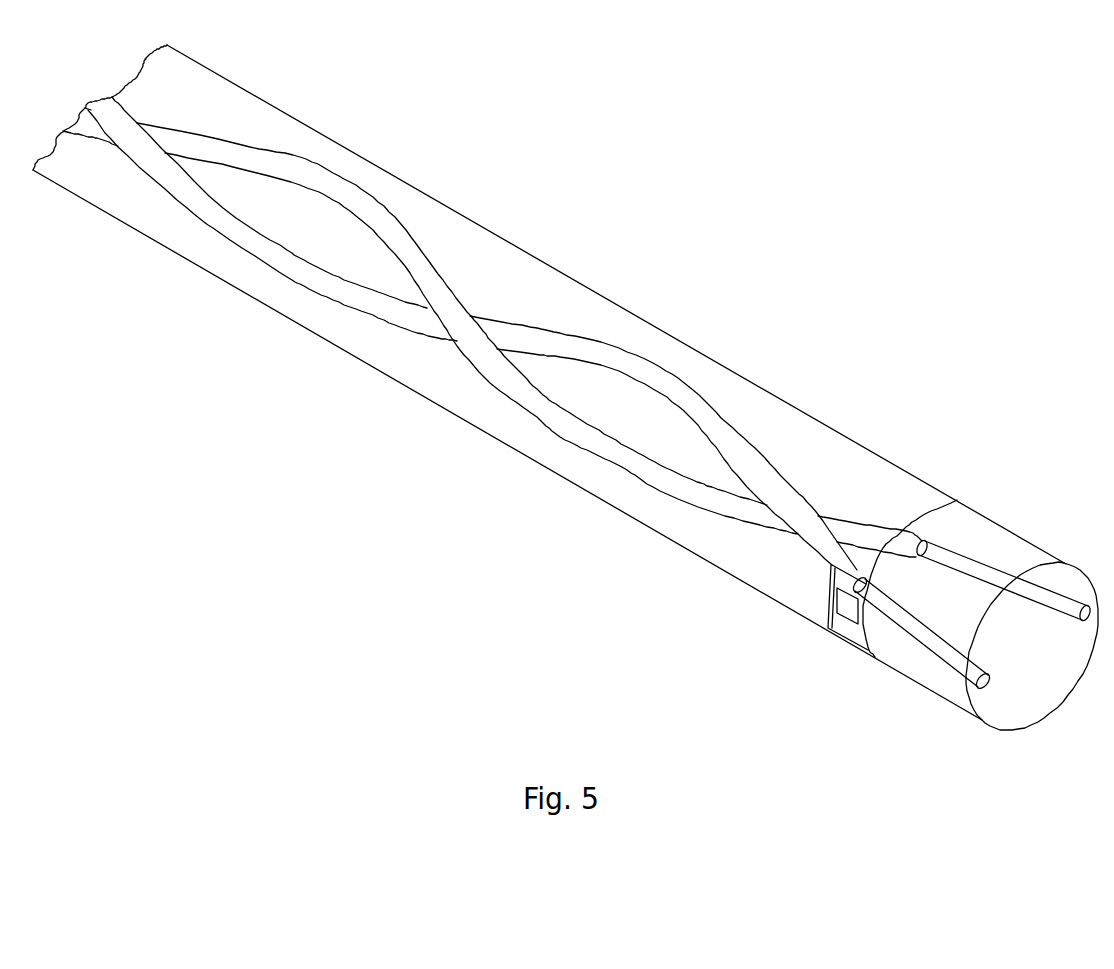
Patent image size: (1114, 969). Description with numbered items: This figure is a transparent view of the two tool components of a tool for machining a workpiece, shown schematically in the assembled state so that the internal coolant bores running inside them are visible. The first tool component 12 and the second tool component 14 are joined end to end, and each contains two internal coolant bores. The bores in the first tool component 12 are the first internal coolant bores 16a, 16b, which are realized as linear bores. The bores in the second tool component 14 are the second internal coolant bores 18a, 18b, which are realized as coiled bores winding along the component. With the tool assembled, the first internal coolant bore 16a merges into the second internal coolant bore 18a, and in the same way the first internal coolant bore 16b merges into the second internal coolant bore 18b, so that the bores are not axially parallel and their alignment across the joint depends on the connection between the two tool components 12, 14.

The first tool component 12 is at (995, 550).
The second tool component 14 is at (841, 458).
The first internal coolant bore 16a is at (967, 568).
The first internal coolant bore 16b is at (897, 613).
The second internal coolant bore 18a is at (707, 501).
The second internal coolant bore 18b is at (720, 429).